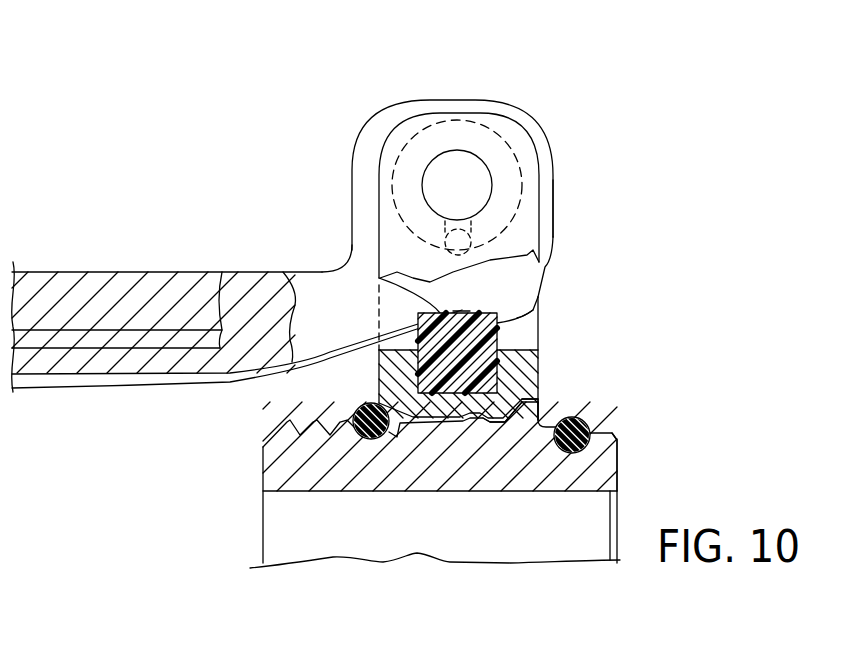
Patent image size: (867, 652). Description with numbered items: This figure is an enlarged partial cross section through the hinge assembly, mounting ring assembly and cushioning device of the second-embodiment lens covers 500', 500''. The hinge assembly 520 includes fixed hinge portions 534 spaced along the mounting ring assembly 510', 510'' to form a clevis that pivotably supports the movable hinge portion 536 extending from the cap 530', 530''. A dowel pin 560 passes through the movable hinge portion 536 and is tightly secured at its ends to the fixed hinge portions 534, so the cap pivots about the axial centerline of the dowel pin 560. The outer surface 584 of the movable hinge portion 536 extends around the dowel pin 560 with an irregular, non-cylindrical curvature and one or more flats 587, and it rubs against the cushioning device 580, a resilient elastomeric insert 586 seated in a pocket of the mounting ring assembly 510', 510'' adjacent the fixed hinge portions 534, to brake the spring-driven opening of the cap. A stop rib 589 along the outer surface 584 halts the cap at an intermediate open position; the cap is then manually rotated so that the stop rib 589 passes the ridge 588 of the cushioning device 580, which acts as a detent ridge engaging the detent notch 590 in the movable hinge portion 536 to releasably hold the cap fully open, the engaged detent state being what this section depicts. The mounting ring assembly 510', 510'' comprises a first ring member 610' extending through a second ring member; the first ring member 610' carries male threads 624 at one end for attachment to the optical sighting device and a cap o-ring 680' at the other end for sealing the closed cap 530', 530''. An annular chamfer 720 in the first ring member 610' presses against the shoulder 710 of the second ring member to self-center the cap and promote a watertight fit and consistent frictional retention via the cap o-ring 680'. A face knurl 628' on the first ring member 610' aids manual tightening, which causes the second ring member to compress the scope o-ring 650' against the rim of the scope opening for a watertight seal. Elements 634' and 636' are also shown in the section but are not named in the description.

The lens cover 500' is at (182, 211).
The lens cover 500'' is at (182, 211).
The cap 530' is at (167, 264).
The cap 530'' is at (167, 264).
The hinge assembly 520 is at (593, 91).
The dowel pin 560 is at (459, 177).
The flats 587 is at (569, 179).
The movable hinge portion 536 is at (611, 208).
The outer surface 584 is at (567, 239).
The fixed hinge portions 534 is at (533, 310).
The stop rib 589 is at (517, 318).
The ridge 588 is at (439, 300).
The membrane 634' is at (237, 350).
The detent notch 590 is at (448, 392).
The cushioning device 580 is at (535, 353).
The insert 586 is at (487, 374).
The mounting ring assembly 510' is at (569, 352).
The mounting ring assembly 510'' is at (569, 352).
The first ring member 610' is at (382, 485).
The male threads 624 is at (307, 414).
The scope o-ring 650' is at (342, 403).
The cap o-ring 680' is at (635, 435).
The annular chamfer 720 is at (530, 408).
The projection 636' is at (509, 473).
The shoulder 710 is at (519, 427).
The face knurl 628' is at (663, 463).